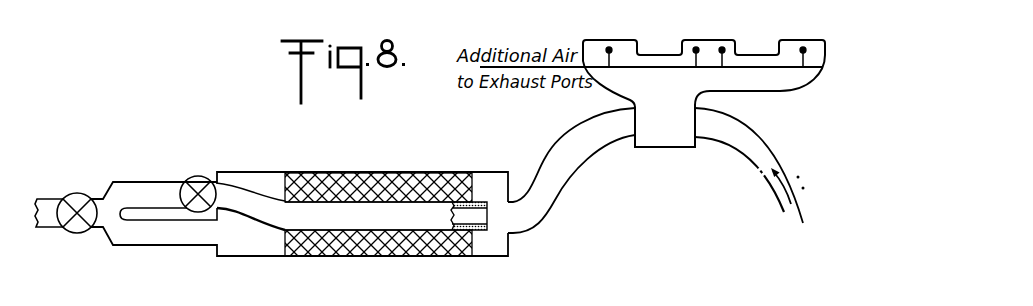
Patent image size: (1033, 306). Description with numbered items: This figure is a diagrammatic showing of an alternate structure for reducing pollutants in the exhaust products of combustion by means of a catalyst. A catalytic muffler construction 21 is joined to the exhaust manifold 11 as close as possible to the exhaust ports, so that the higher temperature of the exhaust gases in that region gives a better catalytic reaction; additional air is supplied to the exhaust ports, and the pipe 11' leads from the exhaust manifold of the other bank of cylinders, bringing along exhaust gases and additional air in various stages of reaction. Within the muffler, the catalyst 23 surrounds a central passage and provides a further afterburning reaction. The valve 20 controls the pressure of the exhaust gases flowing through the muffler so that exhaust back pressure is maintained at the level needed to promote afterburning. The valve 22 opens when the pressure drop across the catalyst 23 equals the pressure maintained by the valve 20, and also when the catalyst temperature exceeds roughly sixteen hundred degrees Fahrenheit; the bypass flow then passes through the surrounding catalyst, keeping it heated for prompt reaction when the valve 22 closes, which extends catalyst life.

The valve 20 is at (73, 190).
The catalytic muffler construction 21 is at (436, 258).
The valve 22 is at (198, 176).
The catalyst 23 is at (367, 174).
The exhaust manifold 11 is at (652, 115).
The pipe 11' is at (750, 165).